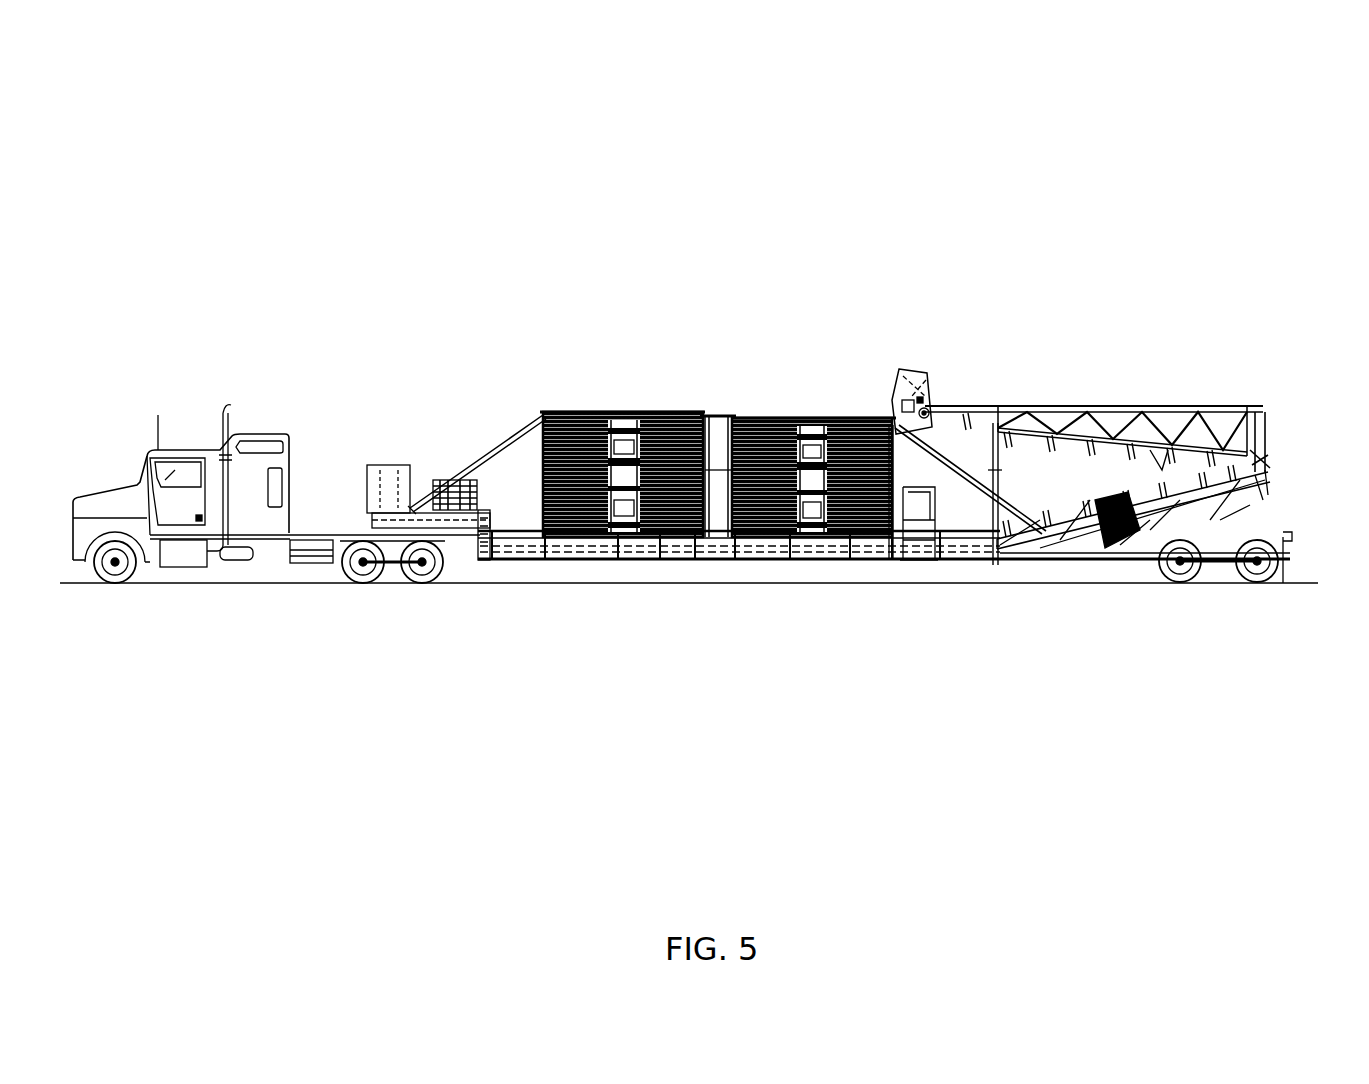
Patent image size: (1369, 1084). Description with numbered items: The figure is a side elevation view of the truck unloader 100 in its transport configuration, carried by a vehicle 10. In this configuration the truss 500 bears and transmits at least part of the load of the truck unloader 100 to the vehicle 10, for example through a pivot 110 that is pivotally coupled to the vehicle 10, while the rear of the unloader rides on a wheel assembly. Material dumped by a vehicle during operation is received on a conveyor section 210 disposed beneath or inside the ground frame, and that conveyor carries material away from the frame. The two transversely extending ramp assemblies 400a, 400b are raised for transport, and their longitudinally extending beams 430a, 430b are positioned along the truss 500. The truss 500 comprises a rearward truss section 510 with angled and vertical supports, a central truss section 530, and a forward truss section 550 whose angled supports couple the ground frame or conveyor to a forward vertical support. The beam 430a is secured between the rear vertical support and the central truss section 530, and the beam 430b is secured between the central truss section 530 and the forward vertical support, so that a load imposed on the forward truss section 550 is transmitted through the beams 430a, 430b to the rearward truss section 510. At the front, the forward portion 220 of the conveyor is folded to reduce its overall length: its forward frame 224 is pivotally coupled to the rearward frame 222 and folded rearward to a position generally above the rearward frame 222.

The vehicle 10 is at (128, 393).
The truck unloader 100 is at (1264, 124).
The pivot 110 is at (364, 520).
The conveyor section 210 is at (692, 598).
The forward portion of the conveyor 220 is at (1134, 456).
The rearward frame 222 is at (1275, 503).
The forward frame 224 is at (1138, 408).
The ramp assembly 400a is at (609, 481).
The ramp assembly 400b is at (821, 496).
The longitudinally extending beam 430a is at (627, 410).
The longitudinally extending beam 430b is at (838, 416).
The truss 500 is at (652, 378).
The rearward truss section 510 is at (487, 439).
The central truss section 530 is at (725, 406).
The forward truss section 550 is at (942, 452).